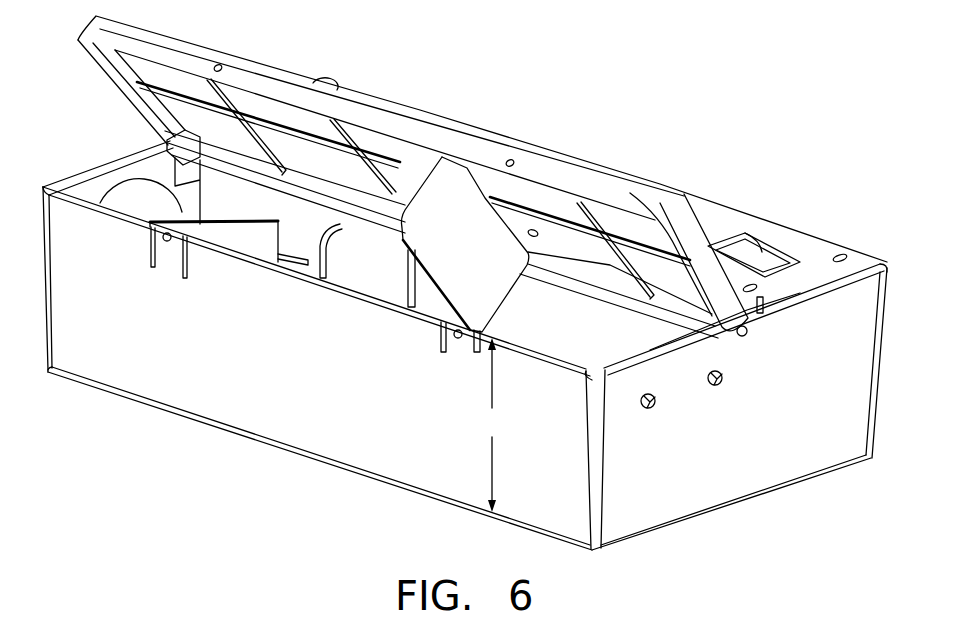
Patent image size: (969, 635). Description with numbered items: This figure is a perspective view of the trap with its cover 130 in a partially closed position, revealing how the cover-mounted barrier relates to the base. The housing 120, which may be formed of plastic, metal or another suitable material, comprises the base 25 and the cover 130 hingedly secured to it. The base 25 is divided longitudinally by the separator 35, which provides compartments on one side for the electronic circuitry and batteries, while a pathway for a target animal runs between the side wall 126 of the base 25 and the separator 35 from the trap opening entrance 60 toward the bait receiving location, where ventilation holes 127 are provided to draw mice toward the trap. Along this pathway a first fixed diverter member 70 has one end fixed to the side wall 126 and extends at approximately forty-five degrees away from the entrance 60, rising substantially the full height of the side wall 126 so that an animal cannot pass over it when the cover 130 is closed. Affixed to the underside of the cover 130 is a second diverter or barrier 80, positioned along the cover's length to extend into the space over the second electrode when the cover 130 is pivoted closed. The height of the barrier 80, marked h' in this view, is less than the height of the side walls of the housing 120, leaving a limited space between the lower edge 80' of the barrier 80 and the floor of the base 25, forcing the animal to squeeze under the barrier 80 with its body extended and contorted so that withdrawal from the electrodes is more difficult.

The housing 120 is at (233, 458).
The side wall 126 is at (147, 361).
The base 25 is at (423, 446).
The separator 35 is at (613, 341).
The trap opening entrance 60 is at (136, 198).
The first fixed barrier or diverter member 70 is at (242, 240).
The second diverter or barrier 80 is at (464, 244).
The lower edge of the barrier 80' is at (315, 302).
The cover 130 is at (608, 188).
The ventilation holes 127 is at (717, 386).
The height dimension h' is at (488, 425).